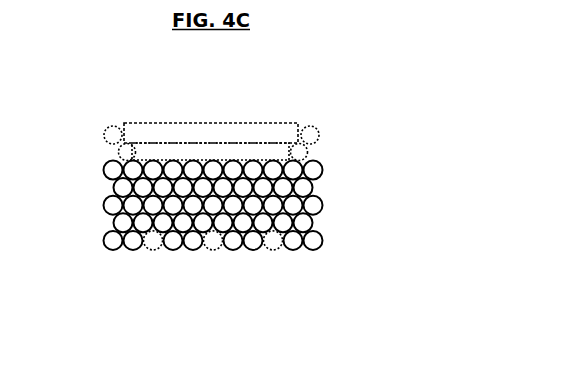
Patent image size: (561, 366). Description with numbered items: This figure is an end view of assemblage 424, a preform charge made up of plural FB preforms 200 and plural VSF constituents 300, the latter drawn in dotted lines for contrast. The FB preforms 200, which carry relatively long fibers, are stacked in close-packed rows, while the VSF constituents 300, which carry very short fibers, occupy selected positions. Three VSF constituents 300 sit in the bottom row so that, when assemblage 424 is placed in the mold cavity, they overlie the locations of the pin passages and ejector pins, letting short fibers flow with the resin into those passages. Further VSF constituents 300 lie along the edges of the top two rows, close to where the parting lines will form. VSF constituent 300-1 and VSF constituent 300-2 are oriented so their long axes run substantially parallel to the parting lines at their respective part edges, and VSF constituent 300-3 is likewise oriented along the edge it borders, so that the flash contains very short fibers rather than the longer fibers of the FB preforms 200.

The FB preform 200 is at (313, 207).
The VSF constituent 300 is at (125, 155).
The VSF constituent 300-1 is at (311, 134).
The VSF constituent 300-2 is at (113, 126).
The VSF constituent 300-3 is at (173, 134).
The assemblage 424 is at (301, 66).